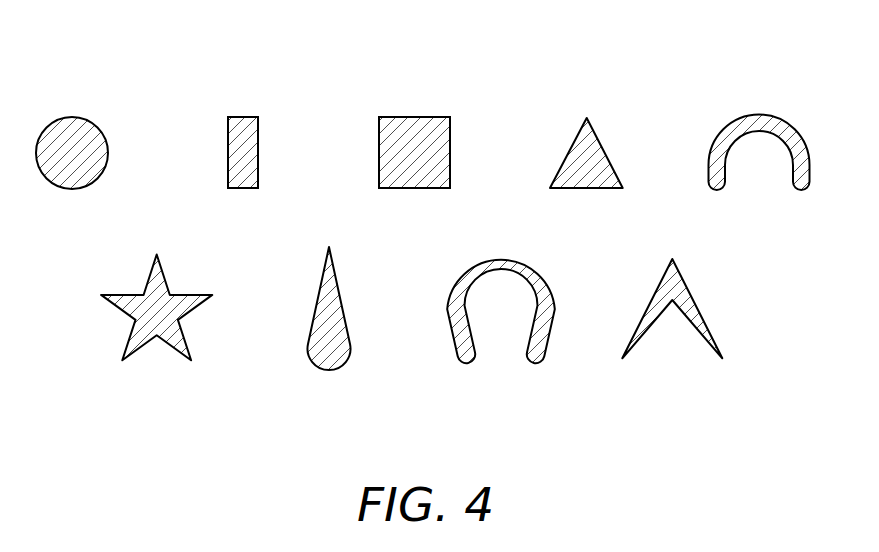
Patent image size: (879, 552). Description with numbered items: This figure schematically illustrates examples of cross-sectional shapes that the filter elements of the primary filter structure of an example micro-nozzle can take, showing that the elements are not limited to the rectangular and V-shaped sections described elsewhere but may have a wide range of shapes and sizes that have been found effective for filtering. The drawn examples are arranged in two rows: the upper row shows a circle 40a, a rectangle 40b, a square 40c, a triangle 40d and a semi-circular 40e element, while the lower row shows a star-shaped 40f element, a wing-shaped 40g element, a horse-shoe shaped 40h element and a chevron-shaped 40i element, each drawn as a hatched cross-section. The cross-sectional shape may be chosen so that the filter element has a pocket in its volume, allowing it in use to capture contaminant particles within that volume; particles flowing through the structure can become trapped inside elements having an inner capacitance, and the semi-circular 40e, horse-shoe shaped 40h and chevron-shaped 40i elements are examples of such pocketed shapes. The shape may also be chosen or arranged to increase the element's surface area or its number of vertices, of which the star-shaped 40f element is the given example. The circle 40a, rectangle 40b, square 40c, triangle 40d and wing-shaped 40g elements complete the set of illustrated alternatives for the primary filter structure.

The circle 40a is at (74, 88).
The rectangle 40b is at (243, 88).
The square 40c is at (416, 88).
The triangle 40d is at (589, 88).
The semi-circular 40e is at (761, 88).
The star-shaped 40f is at (158, 392).
The wing-shaped 40g is at (330, 392).
The horse-shoe shaped 40h is at (501, 392).
The chevron-shaped 40i is at (673, 392).